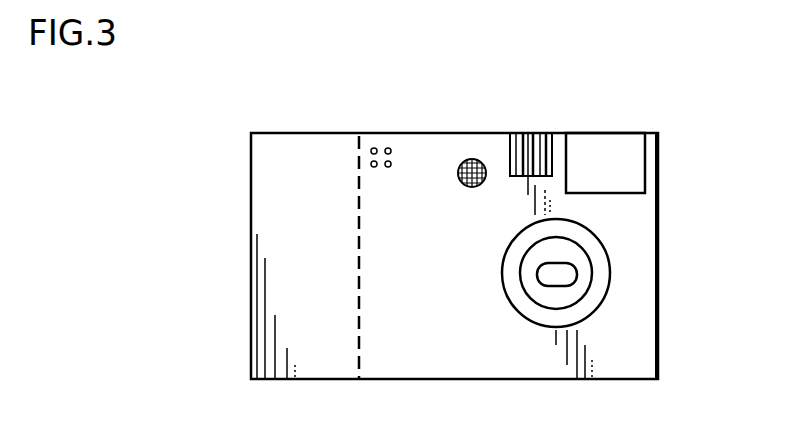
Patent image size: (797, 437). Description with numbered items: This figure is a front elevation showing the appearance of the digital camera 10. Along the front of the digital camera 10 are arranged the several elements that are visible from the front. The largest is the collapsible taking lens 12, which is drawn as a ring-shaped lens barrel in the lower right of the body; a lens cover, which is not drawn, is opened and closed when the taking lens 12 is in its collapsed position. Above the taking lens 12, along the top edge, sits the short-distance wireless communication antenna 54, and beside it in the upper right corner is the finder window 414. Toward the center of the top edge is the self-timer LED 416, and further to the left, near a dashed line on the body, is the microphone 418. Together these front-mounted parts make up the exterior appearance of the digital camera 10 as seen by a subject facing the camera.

The digital camera 10 is at (665, 104).
The collapsible taking lens 12 is at (568, 286).
The short-distance wireless communication antenna 54 is at (537, 133).
The finder window 414 is at (660, 168).
The self-timer LED 416 is at (483, 160).
The microphone 418 is at (387, 142).